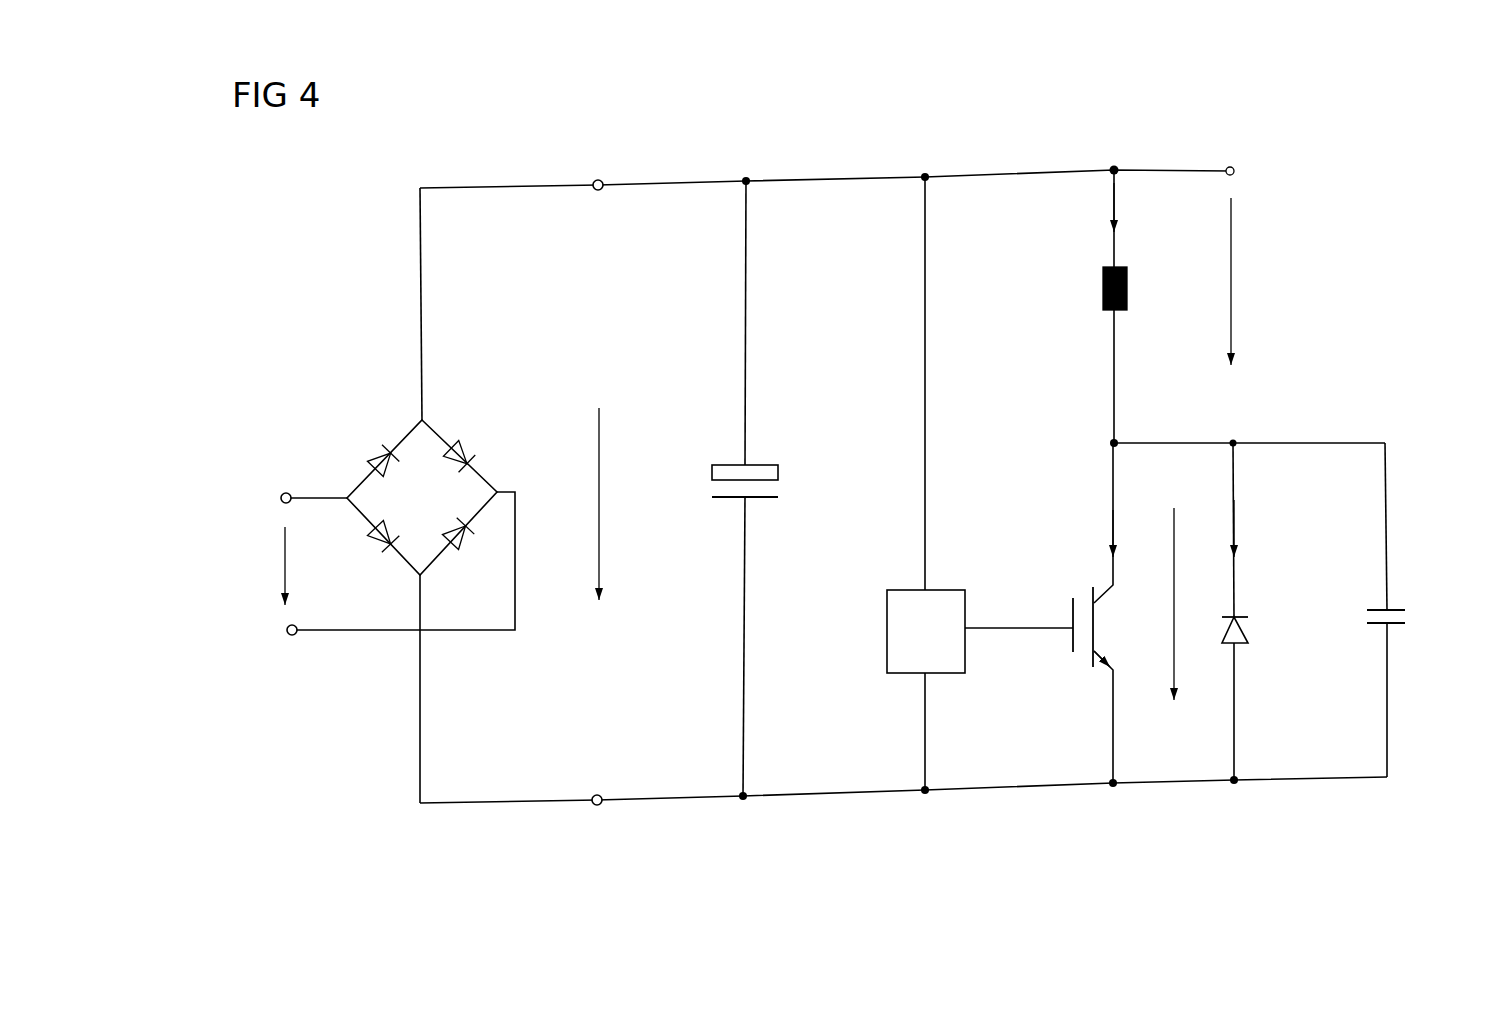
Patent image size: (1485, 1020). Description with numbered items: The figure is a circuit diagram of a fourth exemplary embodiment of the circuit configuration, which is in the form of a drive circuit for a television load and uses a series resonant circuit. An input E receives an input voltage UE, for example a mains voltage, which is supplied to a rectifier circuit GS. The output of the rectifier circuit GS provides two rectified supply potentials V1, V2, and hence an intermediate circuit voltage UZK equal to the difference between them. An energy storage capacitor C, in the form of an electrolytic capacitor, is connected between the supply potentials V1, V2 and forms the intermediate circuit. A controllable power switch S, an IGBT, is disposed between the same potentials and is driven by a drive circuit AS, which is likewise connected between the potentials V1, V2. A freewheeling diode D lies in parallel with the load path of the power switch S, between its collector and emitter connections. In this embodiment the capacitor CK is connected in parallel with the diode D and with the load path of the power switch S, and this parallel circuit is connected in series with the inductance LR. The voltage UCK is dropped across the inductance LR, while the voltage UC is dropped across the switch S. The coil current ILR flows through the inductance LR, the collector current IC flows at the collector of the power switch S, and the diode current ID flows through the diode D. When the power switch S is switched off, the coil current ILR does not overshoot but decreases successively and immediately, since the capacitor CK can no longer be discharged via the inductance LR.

The rectifier circuit GS is at (372, 432).
The input E is at (267, 582).
The input voltage UE is at (301, 566).
The supply potential V1 is at (599, 171).
The supply potential V2 is at (599, 816).
The intermediate circuit voltage UZK is at (622, 504).
The energy storage capacitor C is at (756, 488).
The drive circuit AS is at (926, 483).
The controllable power switch S is at (1043, 613).
The collector current IC is at (1129, 541).
The inductance LR is at (1094, 306).
The coil current ILR is at (1133, 214).
The voltage across the inductance UCK is at (1258, 284).
The freewheeling diode D is at (1248, 611).
The diode current ID is at (1250, 534).
The voltage across the switch UC is at (1194, 615).
The resonant circuit capacitor CK is at (1400, 610).